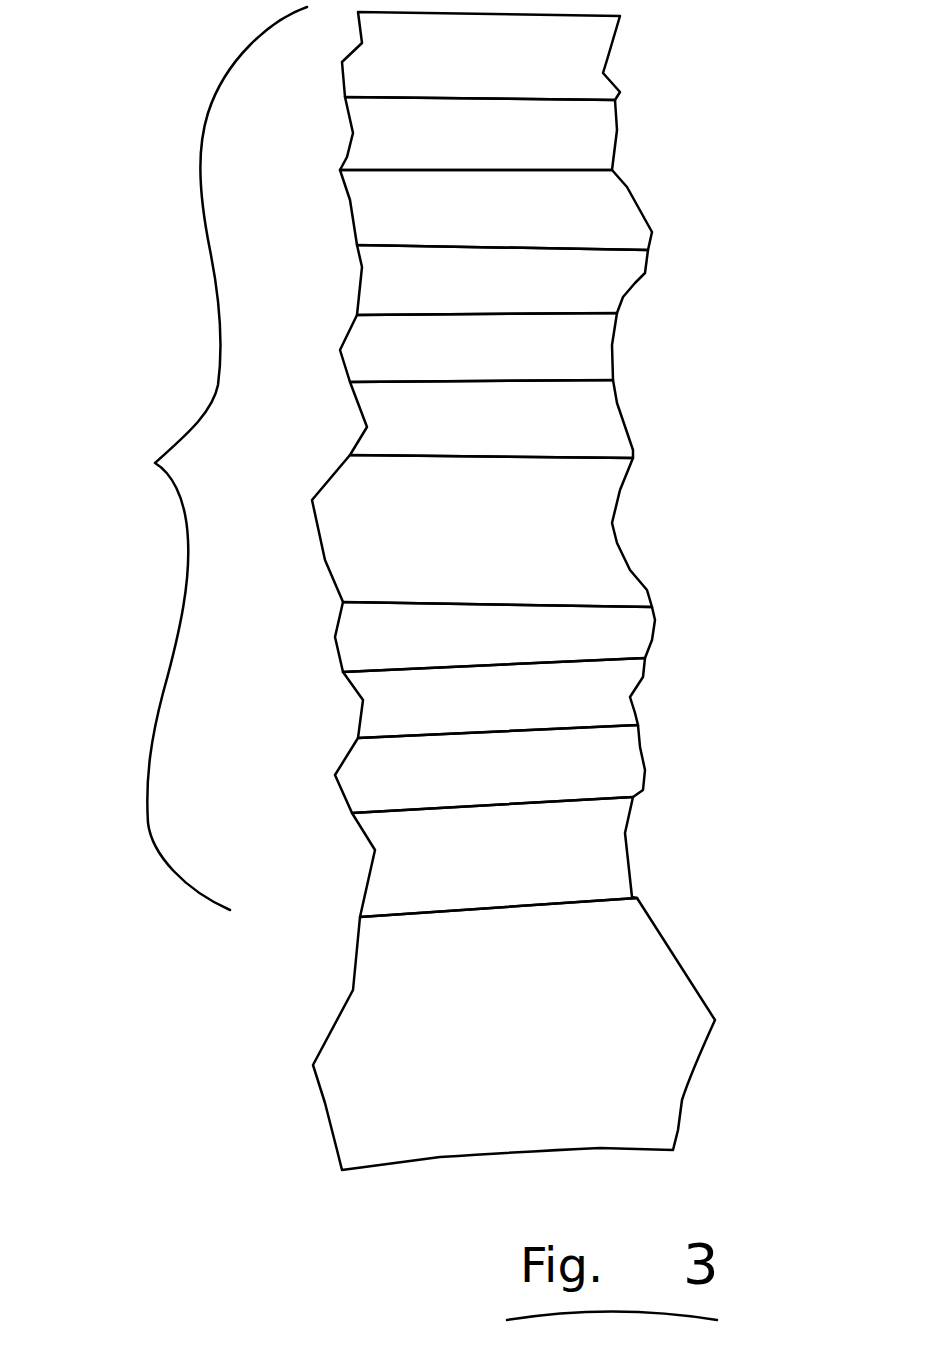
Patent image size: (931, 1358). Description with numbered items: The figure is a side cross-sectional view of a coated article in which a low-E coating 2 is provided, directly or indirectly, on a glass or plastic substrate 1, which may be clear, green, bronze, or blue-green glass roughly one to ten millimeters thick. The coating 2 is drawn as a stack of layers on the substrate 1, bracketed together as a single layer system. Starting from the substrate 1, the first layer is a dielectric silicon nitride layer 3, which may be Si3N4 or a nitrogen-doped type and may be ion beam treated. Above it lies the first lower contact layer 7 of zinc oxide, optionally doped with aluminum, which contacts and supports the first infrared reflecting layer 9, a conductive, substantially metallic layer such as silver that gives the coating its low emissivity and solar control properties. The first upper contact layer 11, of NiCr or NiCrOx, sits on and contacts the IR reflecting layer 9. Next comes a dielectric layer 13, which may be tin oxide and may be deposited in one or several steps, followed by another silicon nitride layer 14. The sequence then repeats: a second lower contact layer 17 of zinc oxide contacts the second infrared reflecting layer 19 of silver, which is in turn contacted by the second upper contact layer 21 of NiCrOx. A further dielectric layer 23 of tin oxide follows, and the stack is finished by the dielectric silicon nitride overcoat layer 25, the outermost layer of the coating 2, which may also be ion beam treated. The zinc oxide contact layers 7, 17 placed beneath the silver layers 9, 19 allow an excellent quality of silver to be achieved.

The substrate 1 is at (685, 997).
The low-E coating 2 is at (186, 539).
The dielectric silicon nitride layer 3 is at (605, 848).
The first lower contact layer 7 is at (628, 767).
The first infrared reflecting layer 9 is at (610, 703).
The first upper contact layer 11 is at (643, 633).
The dielectric layer 13 is at (615, 560).
The silicon nitride layer 14 is at (607, 428).
The second lower contact layer 17 is at (600, 350).
The second infrared reflecting layer 19 is at (618, 277).
The second upper contact layer 21 is at (622, 217).
The dielectric layer 23 is at (597, 140).
The dielectric silicon nitride overcoat layer 25 is at (593, 80).